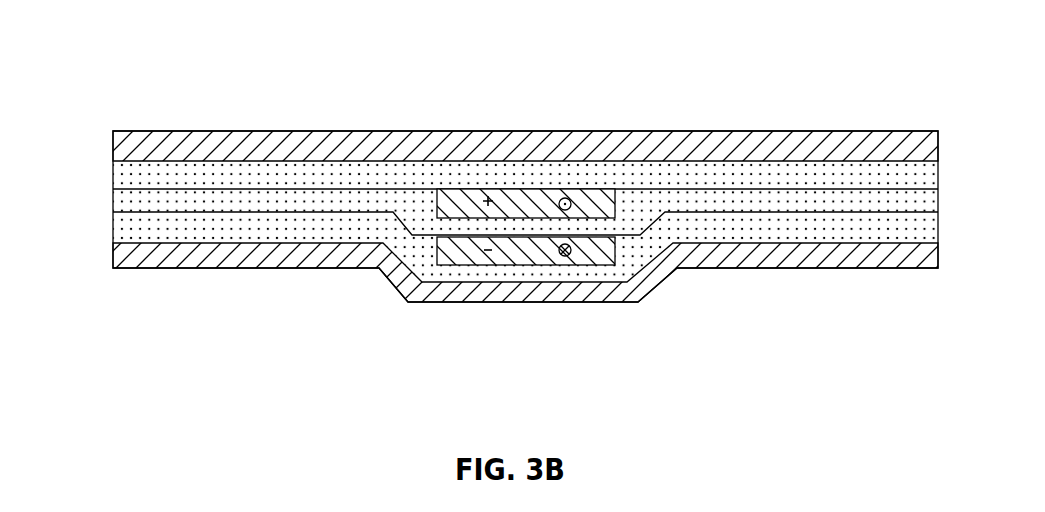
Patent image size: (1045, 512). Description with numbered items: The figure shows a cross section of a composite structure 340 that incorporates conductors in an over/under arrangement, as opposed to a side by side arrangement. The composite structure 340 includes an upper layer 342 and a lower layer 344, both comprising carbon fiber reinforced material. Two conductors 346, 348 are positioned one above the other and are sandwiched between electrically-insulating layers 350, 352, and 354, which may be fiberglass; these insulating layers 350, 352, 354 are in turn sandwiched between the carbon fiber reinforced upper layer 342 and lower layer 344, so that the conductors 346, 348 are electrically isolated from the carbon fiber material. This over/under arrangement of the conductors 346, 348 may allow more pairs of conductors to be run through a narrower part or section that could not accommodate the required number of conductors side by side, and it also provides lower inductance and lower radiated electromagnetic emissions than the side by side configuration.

The composite structure 340 is at (202, 52).
The upper layer 342 is at (737, 133).
The lower layer 344 is at (872, 269).
The conductor 346 is at (525, 200).
The conductor 348 is at (460, 258).
The electrically-insulating layer 350 is at (122, 173).
The electrically-insulating layer 352 is at (122, 203).
The electrically-insulating layer 354 is at (122, 237).